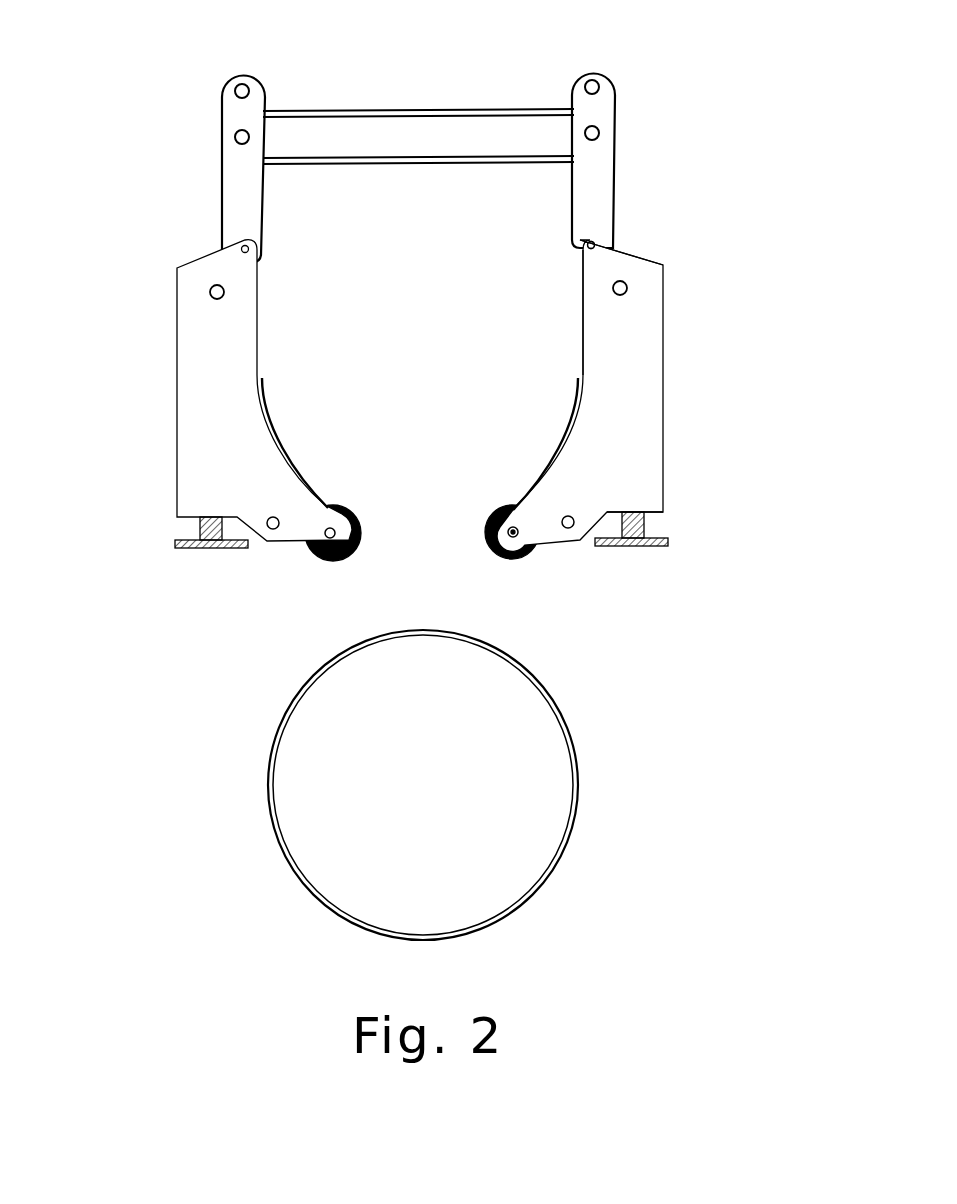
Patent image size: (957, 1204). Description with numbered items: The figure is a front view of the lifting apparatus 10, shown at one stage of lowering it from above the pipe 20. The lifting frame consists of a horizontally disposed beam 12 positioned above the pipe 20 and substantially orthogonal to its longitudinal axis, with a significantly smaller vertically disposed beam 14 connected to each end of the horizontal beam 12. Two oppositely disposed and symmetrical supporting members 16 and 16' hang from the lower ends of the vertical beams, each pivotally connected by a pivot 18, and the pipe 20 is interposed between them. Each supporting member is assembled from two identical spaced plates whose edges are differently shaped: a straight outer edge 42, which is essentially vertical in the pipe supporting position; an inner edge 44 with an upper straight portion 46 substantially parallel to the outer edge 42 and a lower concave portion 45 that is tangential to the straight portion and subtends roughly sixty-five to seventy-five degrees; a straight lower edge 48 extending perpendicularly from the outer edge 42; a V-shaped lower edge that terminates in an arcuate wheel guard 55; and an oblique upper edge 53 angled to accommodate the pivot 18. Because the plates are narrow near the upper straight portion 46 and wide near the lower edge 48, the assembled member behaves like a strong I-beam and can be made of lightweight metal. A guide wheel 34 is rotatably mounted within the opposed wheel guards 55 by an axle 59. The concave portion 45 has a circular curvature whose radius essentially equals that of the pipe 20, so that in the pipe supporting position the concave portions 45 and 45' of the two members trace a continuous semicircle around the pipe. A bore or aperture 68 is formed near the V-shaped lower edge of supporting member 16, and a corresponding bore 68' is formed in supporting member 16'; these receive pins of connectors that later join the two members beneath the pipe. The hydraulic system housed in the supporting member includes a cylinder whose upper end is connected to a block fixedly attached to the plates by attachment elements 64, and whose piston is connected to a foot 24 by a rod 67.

The lifting apparatus 10 is at (212, 147).
The horizontally disposed beam 12 is at (390, 122).
The vertically disposed beam 14 is at (603, 158).
The supporting member 16 is at (628, 445).
The supporting member 16' is at (209, 400).
The pivot 18 is at (580, 253).
The pipe 20 is at (270, 760).
The foot 24 is at (663, 545).
The guide wheel 34 is at (502, 533).
The outer edge 42 is at (663, 392).
The inner edge 44 is at (583, 313).
The concave portion 45 is at (526, 444).
The concave portion 45' is at (330, 443).
The upper straight portion 46 is at (583, 345).
The straight lower edge 48 is at (655, 515).
The upper edge 53 is at (628, 252).
The arcuate wheel guard 55 is at (506, 548).
The axle 59 is at (492, 531).
The attachment element 64 is at (627, 289).
The rod 67 is at (621, 519).
The aperture 68 is at (571, 592).
The bore 68' is at (280, 578).